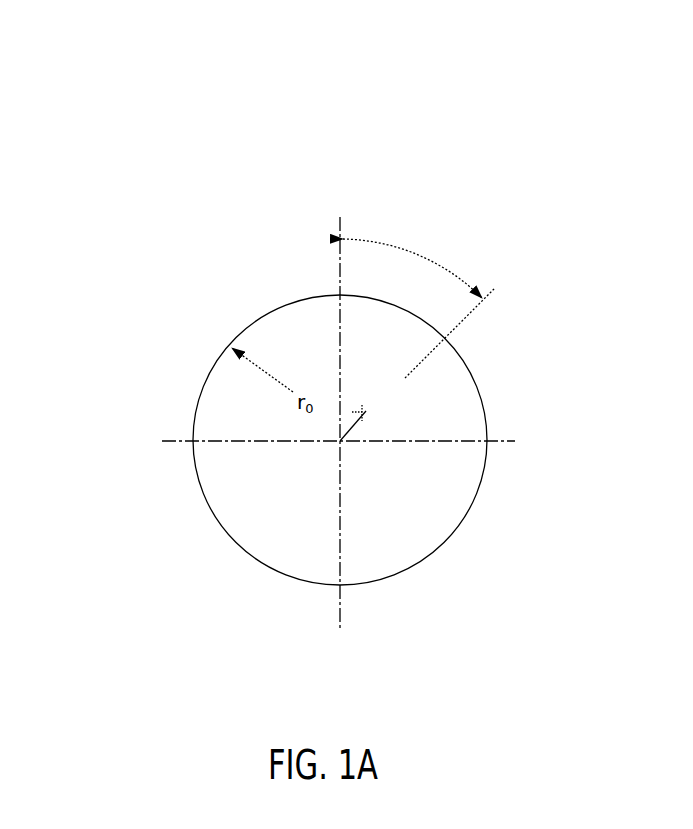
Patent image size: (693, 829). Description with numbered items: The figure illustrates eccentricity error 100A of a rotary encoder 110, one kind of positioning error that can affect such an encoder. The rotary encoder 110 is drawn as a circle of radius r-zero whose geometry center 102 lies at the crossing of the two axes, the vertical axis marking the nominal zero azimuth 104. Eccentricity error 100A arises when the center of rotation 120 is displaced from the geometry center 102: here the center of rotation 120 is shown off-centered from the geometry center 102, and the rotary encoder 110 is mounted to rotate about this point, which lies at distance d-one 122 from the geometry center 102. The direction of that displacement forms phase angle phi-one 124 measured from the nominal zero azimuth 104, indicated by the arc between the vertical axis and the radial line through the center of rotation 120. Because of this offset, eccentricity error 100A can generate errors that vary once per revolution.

The eccentricity error 100A is at (208, 104).
The rotary encoder 110 is at (203, 385).
The nominal zero azimuth 104 is at (337, 293).
The geometry center 102 is at (344, 446).
The distance d1 122 is at (358, 436).
The center of rotation 120 is at (368, 411).
The phase angle φ1 124 is at (422, 257).